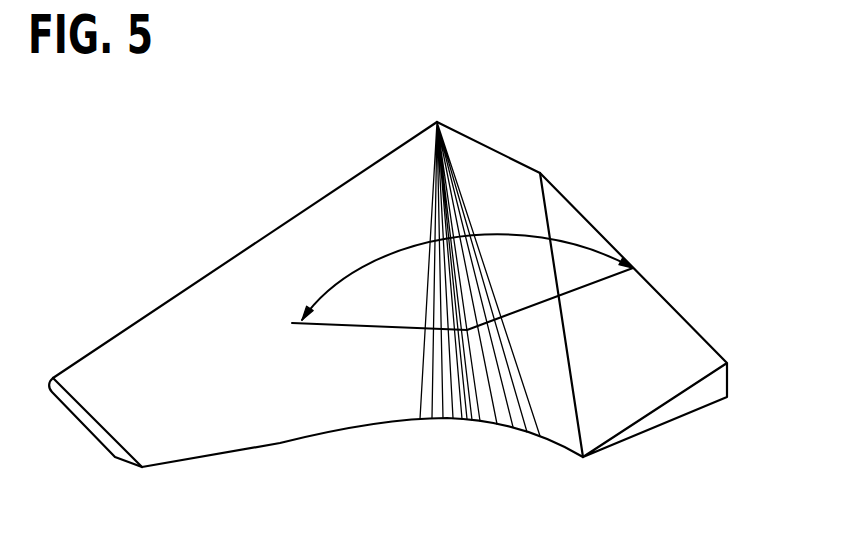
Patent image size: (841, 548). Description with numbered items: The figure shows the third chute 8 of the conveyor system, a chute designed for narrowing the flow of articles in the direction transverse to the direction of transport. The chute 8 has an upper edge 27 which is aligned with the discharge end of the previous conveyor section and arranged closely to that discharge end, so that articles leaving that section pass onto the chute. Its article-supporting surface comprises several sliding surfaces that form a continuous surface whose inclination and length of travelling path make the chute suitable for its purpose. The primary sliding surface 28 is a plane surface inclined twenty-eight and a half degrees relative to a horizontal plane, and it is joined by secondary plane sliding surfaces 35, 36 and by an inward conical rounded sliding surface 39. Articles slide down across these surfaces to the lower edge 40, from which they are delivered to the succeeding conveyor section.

The third chute 8 is at (85, 172).
The upper edge 27 is at (265, 185).
The primary sliding surface 28 is at (215, 302).
The secondary plane sliding surface 35 is at (652, 332).
The secondary plane sliding surface 36 is at (495, 175).
The inward conical rounded sliding surface 39 is at (435, 197).
The lower edge 40 is at (430, 430).